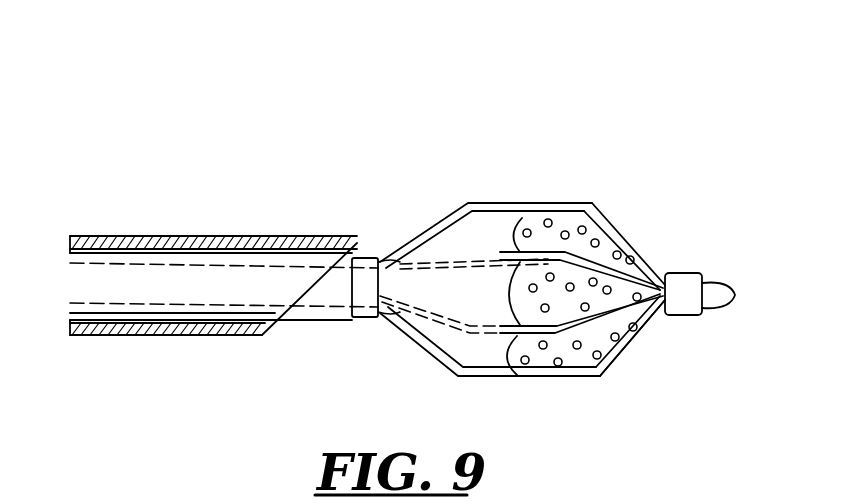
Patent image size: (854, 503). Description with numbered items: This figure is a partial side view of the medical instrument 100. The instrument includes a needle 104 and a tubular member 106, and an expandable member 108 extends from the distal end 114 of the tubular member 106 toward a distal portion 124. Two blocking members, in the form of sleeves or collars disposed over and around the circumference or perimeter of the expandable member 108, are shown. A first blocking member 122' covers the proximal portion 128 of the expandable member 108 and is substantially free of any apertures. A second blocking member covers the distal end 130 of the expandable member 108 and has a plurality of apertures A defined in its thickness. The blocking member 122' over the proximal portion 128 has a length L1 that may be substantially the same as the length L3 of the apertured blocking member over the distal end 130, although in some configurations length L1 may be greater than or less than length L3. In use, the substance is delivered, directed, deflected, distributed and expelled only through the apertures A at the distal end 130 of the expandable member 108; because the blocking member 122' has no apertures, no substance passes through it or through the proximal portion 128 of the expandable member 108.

The medical instrument 100 is at (146, 176).
The needle 104 is at (160, 334).
The tubular member 106 is at (332, 297).
The expandable member 108 is at (636, 172).
The distal end of the tubular member 114 is at (392, 284).
The blocking member 122' is at (528, 389).
The distal portion 124 is at (699, 296).
The proximal portion of the expandable member 128 is at (479, 285).
The distal end of the expandable member 130 is at (533, 278).
The apertures A is at (583, 228).
The length L1 is at (405, 145).
The length L3 is at (533, 145).